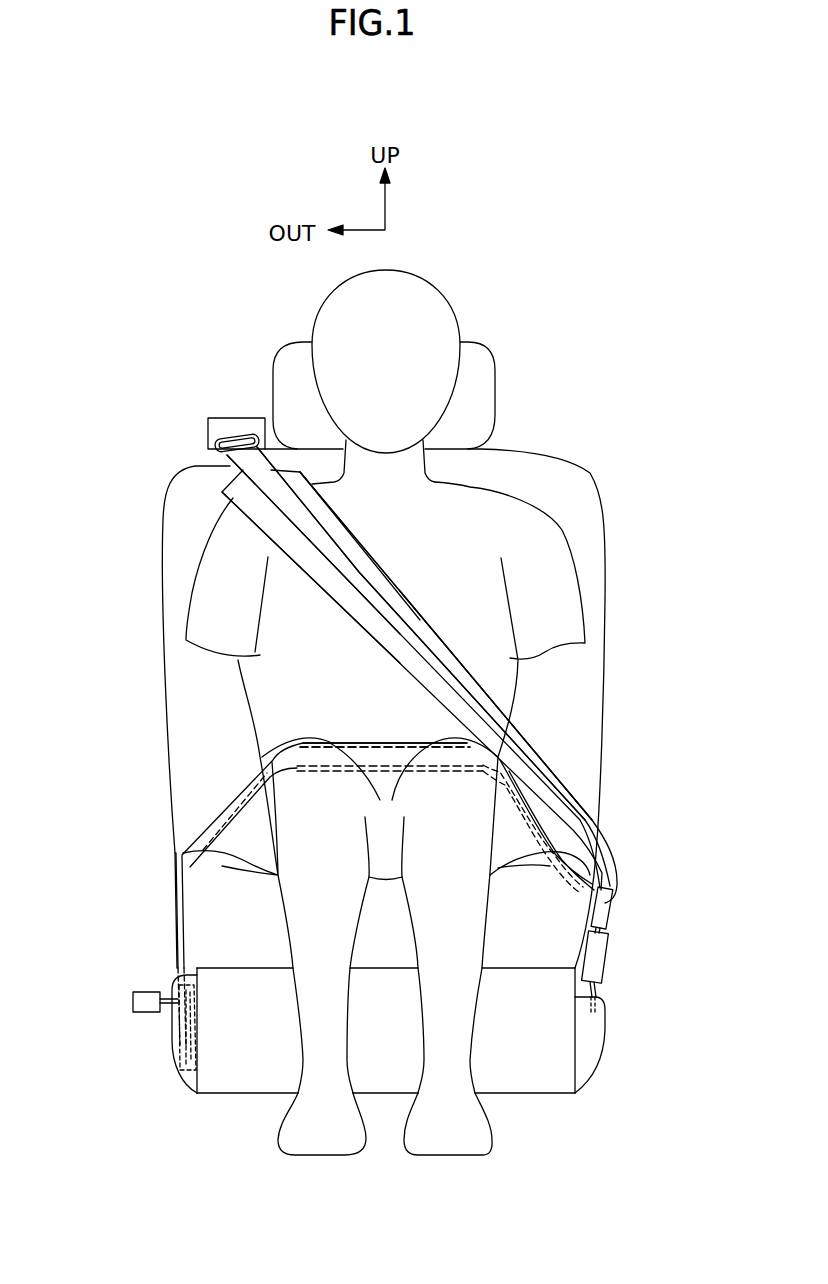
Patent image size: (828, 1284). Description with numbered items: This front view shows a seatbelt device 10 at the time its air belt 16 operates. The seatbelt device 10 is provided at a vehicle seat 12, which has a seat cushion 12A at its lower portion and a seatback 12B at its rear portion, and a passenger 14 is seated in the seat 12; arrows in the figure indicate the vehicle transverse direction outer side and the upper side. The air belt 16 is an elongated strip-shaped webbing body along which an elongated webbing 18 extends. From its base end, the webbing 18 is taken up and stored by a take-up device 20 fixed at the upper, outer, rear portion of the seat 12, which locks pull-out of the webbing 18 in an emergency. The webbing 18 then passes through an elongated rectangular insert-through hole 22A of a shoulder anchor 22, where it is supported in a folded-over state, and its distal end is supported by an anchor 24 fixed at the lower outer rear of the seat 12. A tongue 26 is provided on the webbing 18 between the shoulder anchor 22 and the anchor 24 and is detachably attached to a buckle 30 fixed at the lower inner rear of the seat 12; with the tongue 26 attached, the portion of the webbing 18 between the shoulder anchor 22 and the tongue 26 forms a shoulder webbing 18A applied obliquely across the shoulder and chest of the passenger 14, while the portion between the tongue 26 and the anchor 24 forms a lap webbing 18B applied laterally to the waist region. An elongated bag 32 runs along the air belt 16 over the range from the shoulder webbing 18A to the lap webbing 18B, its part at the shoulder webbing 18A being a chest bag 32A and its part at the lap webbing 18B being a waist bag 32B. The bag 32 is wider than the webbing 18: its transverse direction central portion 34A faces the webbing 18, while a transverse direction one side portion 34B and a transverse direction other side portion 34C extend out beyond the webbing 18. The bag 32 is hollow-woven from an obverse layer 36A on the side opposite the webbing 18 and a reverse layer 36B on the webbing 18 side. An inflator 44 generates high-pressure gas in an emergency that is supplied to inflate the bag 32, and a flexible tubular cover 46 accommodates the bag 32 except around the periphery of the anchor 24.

The seatbelt device 10 is at (374, 712).
The seat 12 is at (380, 717).
The seat cushion 12A is at (208, 905).
The seatback 12B is at (178, 707).
The passenger 14 is at (580, 567).
The air belt 16 is at (404, 569).
The webbing 18 is at (362, 739).
The shoulder webbing 18A is at (398, 604).
The lap webbing 18B is at (370, 742).
The take-up device 20 is at (243, 418).
The shoulder anchor 22 is at (218, 448).
The insert-through hole 22A is at (212, 447).
The anchor 24 is at (176, 1043).
The tongue 26 is at (612, 913).
The buckle 30 is at (606, 958).
The bag 32 is at (368, 625).
The chest bag 32A is at (432, 655).
The waist bag 32B is at (232, 813).
The transverse direction central portion 34A is at (412, 635).
The transverse direction one side portion 34B is at (366, 558).
The transverse direction other side portion 34C is at (330, 585).
The obverse layer 36A is at (325, 518).
The reverse layer 36B is at (272, 520).
The inflator 44 is at (133, 1001).
The cover 46 is at (398, 742).